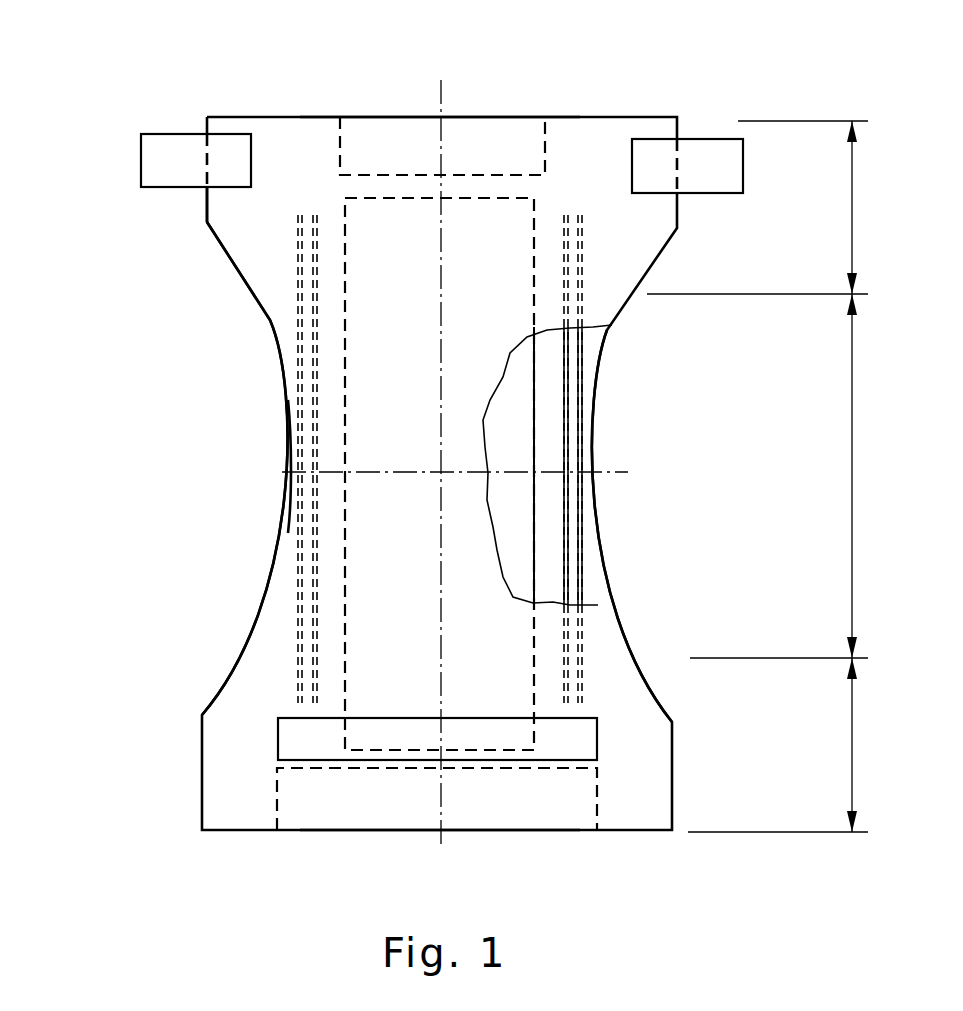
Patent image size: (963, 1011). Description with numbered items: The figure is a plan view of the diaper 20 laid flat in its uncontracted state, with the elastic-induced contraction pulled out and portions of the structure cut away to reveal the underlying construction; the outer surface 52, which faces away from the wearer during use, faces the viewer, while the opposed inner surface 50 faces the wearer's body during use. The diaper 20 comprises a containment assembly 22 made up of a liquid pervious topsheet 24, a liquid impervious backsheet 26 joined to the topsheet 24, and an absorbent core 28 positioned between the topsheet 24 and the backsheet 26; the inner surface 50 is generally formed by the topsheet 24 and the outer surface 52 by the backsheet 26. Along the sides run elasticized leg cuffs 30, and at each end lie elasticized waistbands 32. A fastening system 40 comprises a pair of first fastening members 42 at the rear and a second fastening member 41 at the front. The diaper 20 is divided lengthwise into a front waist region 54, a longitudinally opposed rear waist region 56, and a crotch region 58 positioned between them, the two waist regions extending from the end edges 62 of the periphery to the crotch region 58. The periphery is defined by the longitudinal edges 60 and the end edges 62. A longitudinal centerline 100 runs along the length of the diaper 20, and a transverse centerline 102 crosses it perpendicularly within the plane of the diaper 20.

The diaper 20 is at (172, 80).
The containment assembly 22 is at (461, 299).
The topsheet 24 is at (592, 347).
The backsheet 26 is at (252, 237).
The absorbent core 28 is at (518, 433).
The elasticized leg cuffs 30 is at (579, 557).
The elasticized waistbands 32 is at (522, 128).
The fastening system 40 is at (125, 174).
The second fastening member 41 is at (576, 757).
The first fastening members 42 is at (165, 145).
The inner surface 50 is at (288, 425).
The outer surface 52 is at (230, 205).
The front waist region 54 is at (778, 745).
The rear waist region 56 is at (760, 207).
The crotch region 58 is at (779, 476).
The longitudinal edges 60 is at (262, 302).
The end edges 62 is at (302, 113).
The longitudinal centerline 100 is at (444, 90).
The transverse centerline 102 is at (618, 473).